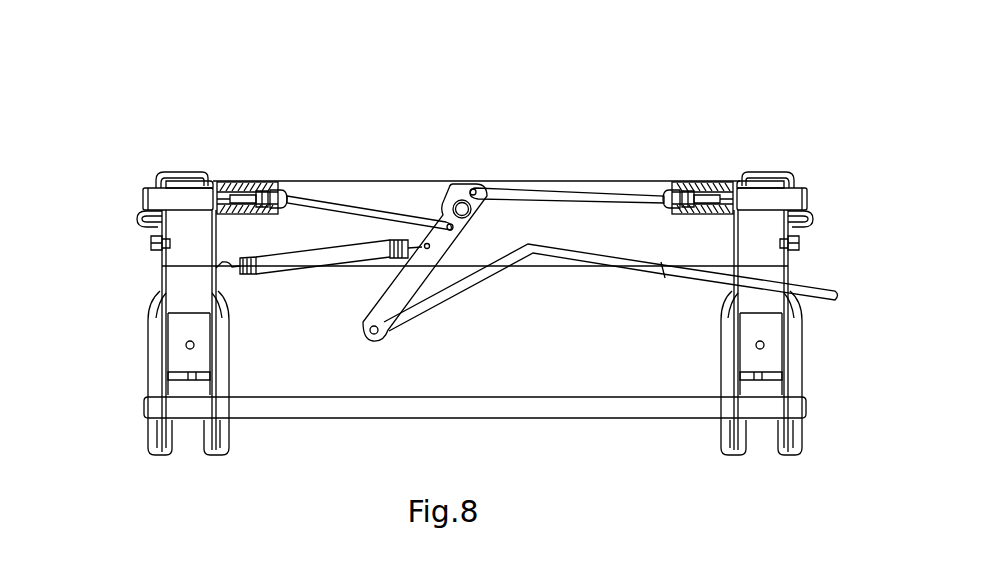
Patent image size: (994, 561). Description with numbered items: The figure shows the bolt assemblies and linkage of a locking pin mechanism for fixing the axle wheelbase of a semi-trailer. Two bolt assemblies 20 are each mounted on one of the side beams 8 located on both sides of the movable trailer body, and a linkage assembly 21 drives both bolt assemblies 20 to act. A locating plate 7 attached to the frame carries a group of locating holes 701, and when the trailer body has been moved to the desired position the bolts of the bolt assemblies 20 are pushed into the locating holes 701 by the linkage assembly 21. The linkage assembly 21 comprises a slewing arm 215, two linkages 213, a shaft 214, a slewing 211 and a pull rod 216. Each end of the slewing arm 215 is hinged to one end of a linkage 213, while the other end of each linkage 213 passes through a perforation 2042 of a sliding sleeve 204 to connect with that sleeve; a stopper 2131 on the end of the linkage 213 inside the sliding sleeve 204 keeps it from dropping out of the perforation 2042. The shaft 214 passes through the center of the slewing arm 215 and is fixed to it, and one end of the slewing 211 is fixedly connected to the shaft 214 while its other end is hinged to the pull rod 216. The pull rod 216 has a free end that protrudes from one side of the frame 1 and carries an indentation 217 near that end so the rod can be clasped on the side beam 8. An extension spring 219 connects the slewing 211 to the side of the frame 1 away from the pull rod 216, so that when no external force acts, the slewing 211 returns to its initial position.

The frame 1 is at (190, 298).
The locating plate 7 is at (158, 184).
The side beam 8 is at (181, 178).
The locating hole 701 is at (150, 188).
The bolt assembly 20 is at (228, 176).
The sliding sleeve 204 is at (243, 185).
The stopper 2131 is at (272, 190).
The perforation 2042 is at (287, 190).
The linkage assembly 21 is at (415, 80).
The slewing 211 is at (402, 292).
The linkage 213 is at (338, 206).
The shaft 214 is at (453, 220).
The slewing arm 215 is at (465, 186).
The pull rod 216 is at (545, 242).
The indentation 217 is at (662, 266).
The extension spring 219 is at (291, 264).